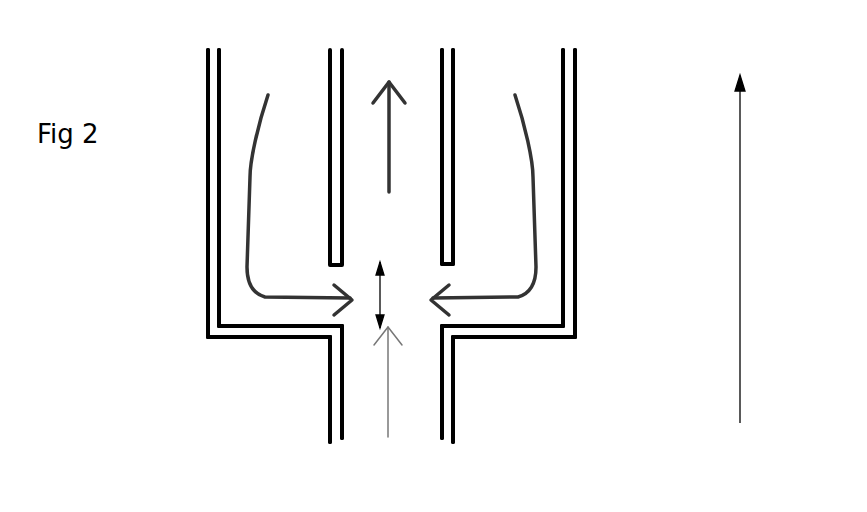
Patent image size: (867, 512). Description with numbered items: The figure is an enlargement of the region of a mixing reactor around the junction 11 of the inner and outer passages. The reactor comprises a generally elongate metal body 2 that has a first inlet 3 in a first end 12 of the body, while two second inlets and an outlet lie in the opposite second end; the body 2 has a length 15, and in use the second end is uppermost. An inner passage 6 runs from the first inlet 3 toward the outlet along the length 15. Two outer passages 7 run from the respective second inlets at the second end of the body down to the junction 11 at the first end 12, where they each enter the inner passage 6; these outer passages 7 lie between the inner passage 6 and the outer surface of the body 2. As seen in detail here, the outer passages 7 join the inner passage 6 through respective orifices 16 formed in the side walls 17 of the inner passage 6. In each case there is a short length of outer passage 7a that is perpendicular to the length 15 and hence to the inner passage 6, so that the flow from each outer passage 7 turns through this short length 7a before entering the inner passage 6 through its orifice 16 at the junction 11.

The metal body 2 is at (208, 288).
The first inlet 3 is at (455, 412).
The inner passage 6 is at (440, 75).
The outer passages 7 is at (228, 223).
The short length of outer passage 7a is at (257, 333).
The junction 11 is at (407, 298).
The first end 12 is at (292, 340).
The length 15 is at (740, 287).
The orifices 16 is at (342, 274).
The side walls 17 is at (440, 97).